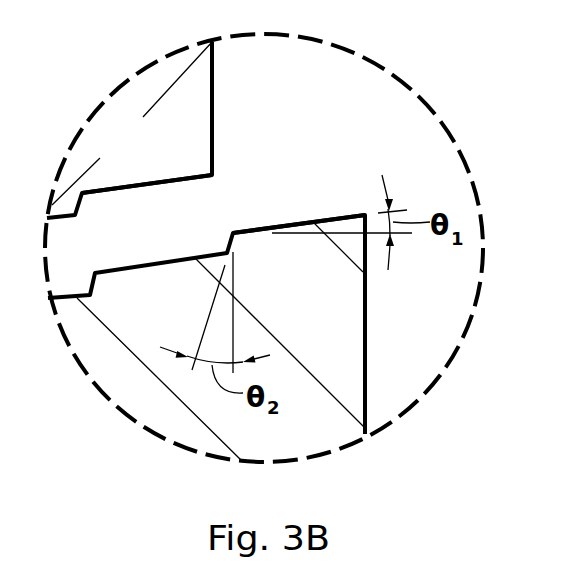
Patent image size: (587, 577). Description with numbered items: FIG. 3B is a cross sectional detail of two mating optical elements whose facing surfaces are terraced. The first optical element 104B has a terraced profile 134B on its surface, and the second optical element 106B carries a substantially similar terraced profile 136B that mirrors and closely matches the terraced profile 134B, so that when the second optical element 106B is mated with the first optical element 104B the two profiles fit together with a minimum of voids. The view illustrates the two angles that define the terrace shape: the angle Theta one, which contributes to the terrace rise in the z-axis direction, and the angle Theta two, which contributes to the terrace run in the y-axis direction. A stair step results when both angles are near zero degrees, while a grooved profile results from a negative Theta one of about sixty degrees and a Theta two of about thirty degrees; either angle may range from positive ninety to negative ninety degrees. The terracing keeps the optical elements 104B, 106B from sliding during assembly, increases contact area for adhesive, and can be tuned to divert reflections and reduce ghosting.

The second optical element 106B is at (167, 155).
The terraced profile 136B is at (162, 184).
The first optical element 104B is at (330, 306).
The terraced profile 134B is at (246, 231).